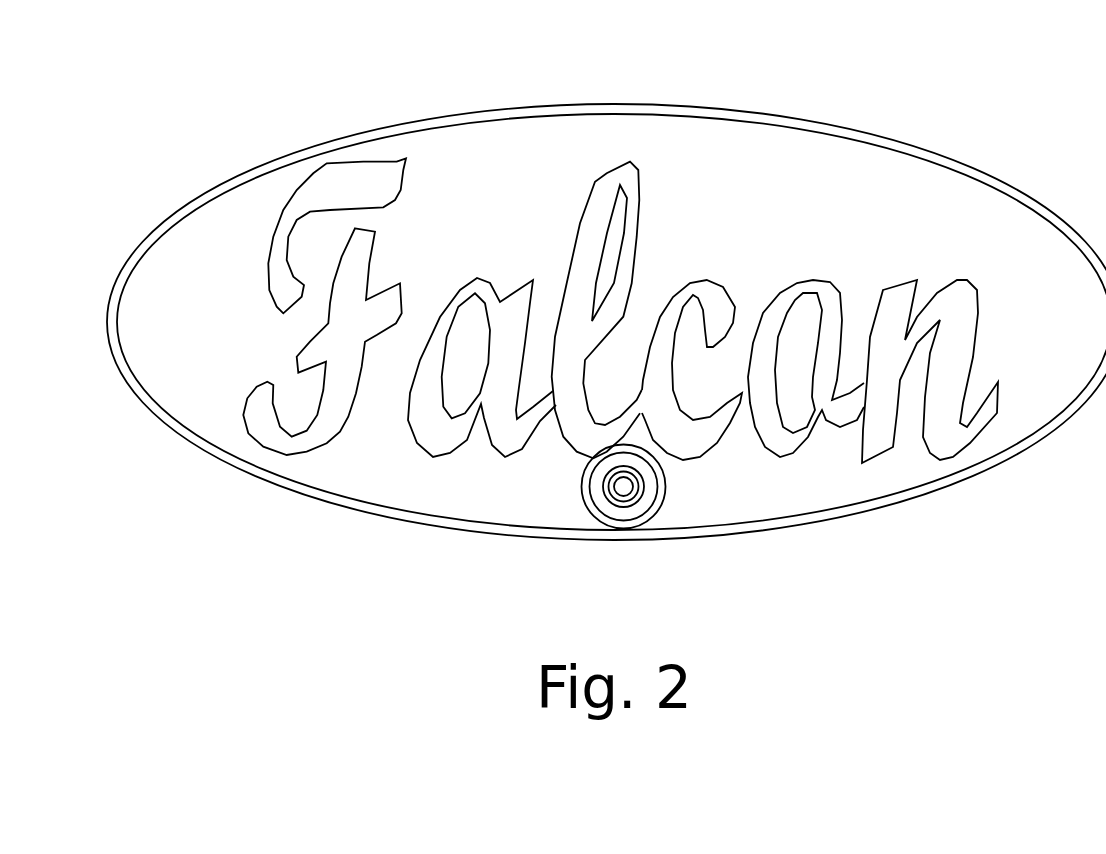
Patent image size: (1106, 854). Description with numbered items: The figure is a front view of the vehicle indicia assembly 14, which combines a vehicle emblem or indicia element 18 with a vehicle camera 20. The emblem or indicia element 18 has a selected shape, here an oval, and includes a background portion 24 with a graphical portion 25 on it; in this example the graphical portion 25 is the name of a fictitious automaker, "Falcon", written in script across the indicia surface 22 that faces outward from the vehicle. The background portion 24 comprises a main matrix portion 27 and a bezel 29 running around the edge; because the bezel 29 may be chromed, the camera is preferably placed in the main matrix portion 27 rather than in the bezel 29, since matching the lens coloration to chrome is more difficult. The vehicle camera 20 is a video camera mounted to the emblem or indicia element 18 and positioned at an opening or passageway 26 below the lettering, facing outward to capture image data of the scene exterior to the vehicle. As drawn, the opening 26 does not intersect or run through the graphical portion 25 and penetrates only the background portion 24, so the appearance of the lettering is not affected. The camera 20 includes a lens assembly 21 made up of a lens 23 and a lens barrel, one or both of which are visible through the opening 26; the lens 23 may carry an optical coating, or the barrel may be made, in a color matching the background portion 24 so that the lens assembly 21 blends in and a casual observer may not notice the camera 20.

The vehicle indicia assembly 14 is at (316, 94).
The vehicle emblem or indicia element 18 is at (800, 125).
The vehicle camera 20 is at (655, 517).
The lens assembly 21 is at (665, 501).
The indicia surface 22 is at (605, 192).
The lens 23 is at (623, 481).
The background portion 24 is at (875, 220).
The graphical portion 25 is at (596, 498).
The opening 26 is at (608, 520).
The main matrix portion 27 is at (890, 477).
The bezel 29 is at (808, 518).